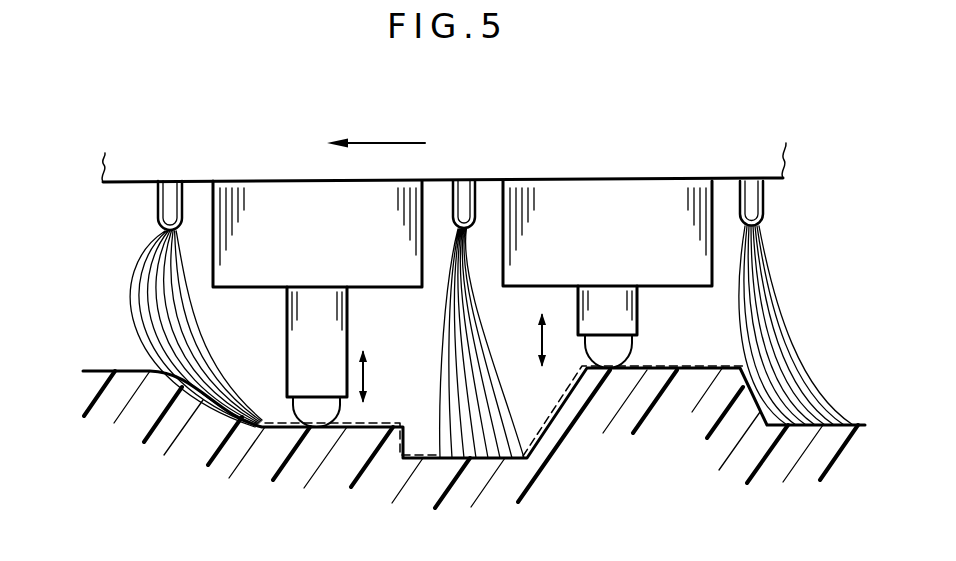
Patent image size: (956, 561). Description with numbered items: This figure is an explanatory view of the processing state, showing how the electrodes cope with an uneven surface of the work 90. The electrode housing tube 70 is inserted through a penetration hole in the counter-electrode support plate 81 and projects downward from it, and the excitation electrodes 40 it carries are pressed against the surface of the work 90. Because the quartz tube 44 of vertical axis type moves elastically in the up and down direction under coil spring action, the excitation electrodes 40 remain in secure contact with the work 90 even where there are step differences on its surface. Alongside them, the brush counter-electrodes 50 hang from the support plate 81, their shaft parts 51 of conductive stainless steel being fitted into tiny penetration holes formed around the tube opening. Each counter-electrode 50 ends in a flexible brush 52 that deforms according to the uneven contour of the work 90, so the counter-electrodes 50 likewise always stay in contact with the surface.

The counter-electrode support plate 81 is at (575, 153).
The electrode housing tube 70 is at (658, 186).
The shaft part 51 is at (750, 203).
The counter-electrode 50 is at (461, 342).
The flexible brush 52 is at (775, 372).
The excitation electrode 40 is at (427, 411).
The quartz tube 44 is at (612, 362).
The work 90 is at (357, 527).